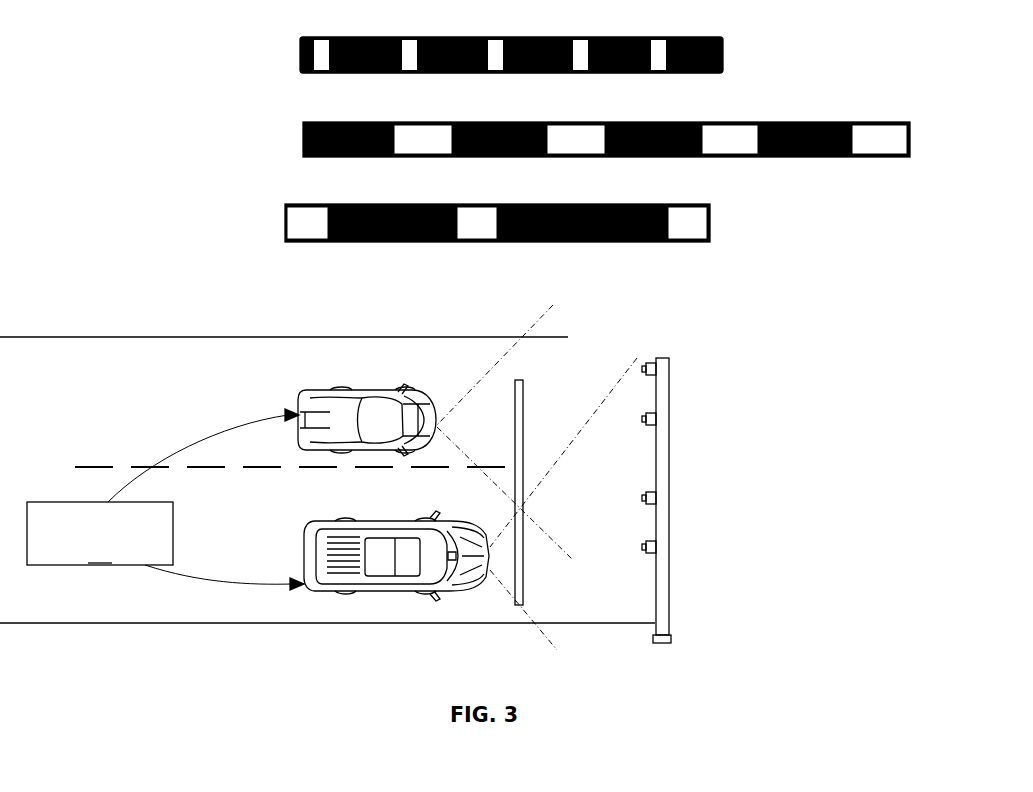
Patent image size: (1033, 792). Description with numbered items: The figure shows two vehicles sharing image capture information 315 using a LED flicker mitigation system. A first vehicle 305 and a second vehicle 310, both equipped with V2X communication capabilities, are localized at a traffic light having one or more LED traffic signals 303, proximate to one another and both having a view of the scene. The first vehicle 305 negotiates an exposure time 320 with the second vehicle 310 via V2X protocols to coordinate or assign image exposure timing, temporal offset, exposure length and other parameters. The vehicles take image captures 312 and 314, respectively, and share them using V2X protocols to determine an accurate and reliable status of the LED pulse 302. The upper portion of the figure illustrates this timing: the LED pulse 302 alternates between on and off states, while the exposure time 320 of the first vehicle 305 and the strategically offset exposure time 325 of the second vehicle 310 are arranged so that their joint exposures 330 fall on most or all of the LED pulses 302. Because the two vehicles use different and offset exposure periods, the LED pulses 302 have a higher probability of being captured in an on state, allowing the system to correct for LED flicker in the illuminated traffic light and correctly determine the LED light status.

The LED pulse 302 is at (283, 66).
The LED traffic signal 303 is at (669, 460).
The first vehicle 305 is at (305, 532).
The second vehicle 310 is at (300, 395).
The image capture 312 is at (548, 637).
The image capture 314 is at (516, 339).
The image capture information 315 is at (165, 499).
The exposure time 320 is at (282, 150).
The exposure time offset 325 is at (266, 235).
The joint exposures 330 is at (428, 157).